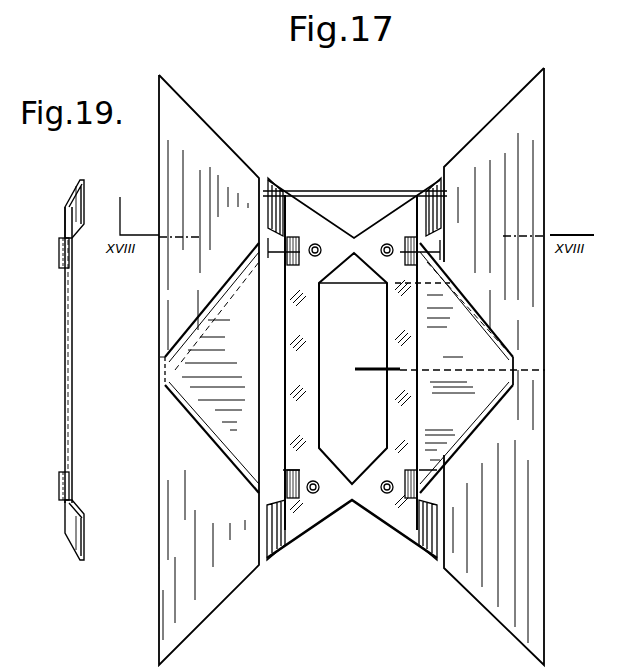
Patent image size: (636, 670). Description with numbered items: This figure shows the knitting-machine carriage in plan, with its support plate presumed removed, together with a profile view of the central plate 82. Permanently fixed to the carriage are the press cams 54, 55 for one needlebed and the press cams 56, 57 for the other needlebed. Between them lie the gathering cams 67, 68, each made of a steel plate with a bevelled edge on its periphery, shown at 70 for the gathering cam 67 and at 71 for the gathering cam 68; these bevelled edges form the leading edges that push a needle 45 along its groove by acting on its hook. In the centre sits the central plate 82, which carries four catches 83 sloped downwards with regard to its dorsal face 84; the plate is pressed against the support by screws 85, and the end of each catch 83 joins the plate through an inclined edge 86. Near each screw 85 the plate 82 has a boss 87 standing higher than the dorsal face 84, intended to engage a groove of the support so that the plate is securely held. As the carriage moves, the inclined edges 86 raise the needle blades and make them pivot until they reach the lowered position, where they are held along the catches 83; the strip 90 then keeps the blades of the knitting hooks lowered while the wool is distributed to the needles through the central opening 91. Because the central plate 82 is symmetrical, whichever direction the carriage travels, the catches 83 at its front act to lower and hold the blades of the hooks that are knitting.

In FIG. 17, the needle 45 is at (383, 190).
In FIG. 17, the press cam 54 is at (535, 587).
In FIG. 17, the press cam 55 is at (538, 142).
In FIG. 17, the press cam 56 is at (160, 540).
In FIG. 17, the press cam 57 is at (196, 133).
In FIG. 17, the gathering cam 67 is at (497, 388).
In FIG. 17, the gathering cam 68 is at (162, 426).
In FIG. 17, the bevelled edge 70 is at (515, 437).
In FIG. 17, the bevelled edge 71 is at (162, 371).
In FIG. 17, the central plate 82 is at (352, 503).
In FIG. 19, the central plate 82 is at (67, 382).
In FIG. 17, the catch 83 is at (268, 185).
In FIG. 19, the catch 83 is at (82, 190).
In FIG. 19, the dorsal face 84 is at (58, 349).
In FIG. 17, the screw 85 is at (386, 244).
In FIG. 17, the inclined edge 86 is at (318, 196).
In FIG. 19, the inclined edge 86 is at (76, 198).
In FIG. 17, the boss 87 is at (287, 262).
In FIG. 19, the boss 87 is at (60, 259).
In FIG. 17, the strip 90 is at (303, 404).
In FIG. 17, the central opening 91 is at (312, 439).